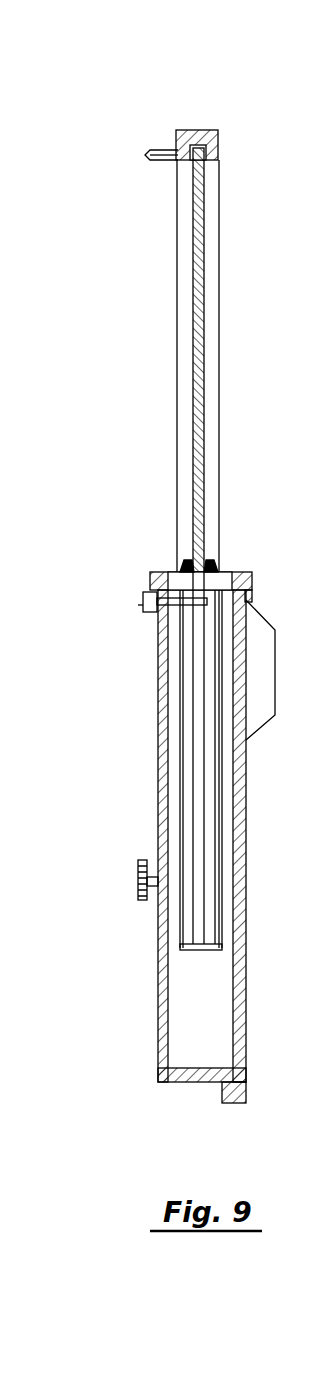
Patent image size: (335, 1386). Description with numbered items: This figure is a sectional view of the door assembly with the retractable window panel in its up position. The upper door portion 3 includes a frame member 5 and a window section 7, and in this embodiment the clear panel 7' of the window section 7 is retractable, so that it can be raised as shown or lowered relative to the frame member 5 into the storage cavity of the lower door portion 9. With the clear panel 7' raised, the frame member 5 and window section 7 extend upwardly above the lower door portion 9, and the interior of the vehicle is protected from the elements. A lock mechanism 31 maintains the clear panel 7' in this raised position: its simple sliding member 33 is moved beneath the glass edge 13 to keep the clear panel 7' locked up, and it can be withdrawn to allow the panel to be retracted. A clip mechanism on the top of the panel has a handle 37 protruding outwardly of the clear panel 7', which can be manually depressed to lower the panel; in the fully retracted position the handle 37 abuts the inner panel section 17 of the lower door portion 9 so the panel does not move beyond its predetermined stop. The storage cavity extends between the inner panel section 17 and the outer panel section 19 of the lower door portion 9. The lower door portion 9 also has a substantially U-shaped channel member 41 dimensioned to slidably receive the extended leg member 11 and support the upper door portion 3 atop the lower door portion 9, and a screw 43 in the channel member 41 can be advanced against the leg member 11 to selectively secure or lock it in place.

The upper door portion 3 is at (170, 315).
The frame member 5 is at (203, 132).
The window section 7 is at (244, 366).
The clear panel 7' is at (151, 360).
The handle 37 is at (152, 150).
The lock mechanism 31 is at (148, 562).
The glass edge 13 is at (215, 566).
The sliding member 33 is at (143, 603).
The lower door portion 9 is at (171, 837).
The inner panel section 17 is at (158, 788).
The outer panel section 19 is at (247, 806).
The leg member 11 is at (180, 733).
The U-shaped channel member 41 is at (178, 831).
The screw 43 is at (140, 893).